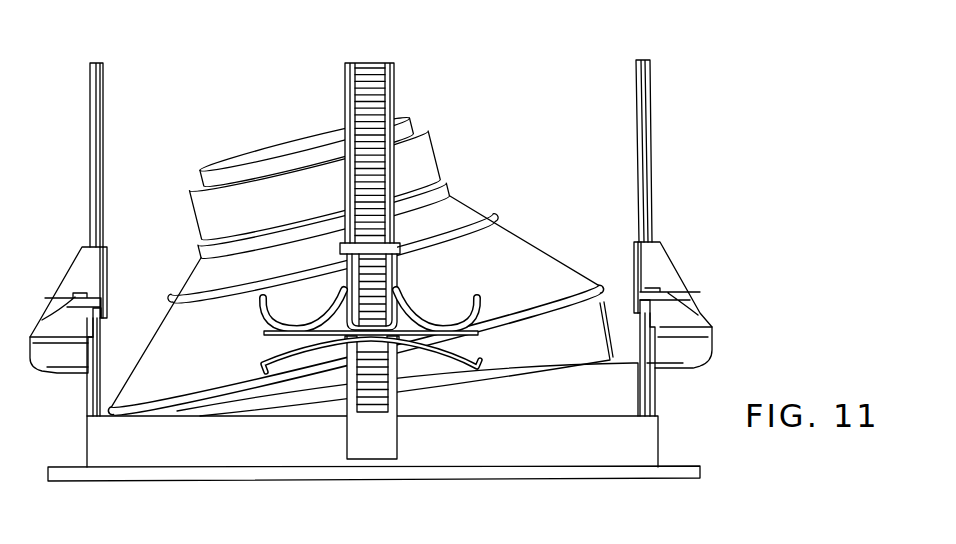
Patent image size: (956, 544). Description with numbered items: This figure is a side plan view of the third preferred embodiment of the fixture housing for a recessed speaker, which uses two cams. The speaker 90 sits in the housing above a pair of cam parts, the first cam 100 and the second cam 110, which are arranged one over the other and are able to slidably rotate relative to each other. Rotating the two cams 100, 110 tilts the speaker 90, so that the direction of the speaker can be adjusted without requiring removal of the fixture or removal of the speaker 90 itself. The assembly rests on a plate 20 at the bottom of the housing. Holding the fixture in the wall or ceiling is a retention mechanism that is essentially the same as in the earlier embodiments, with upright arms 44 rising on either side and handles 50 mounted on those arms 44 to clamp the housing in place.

The mounting plate 20 is at (158, 482).
The arm 44 is at (652, 158).
The handle 50 is at (680, 270).
The speaker 90 is at (253, 148).
The cam 100 is at (637, 383).
The cam 110 is at (605, 340).